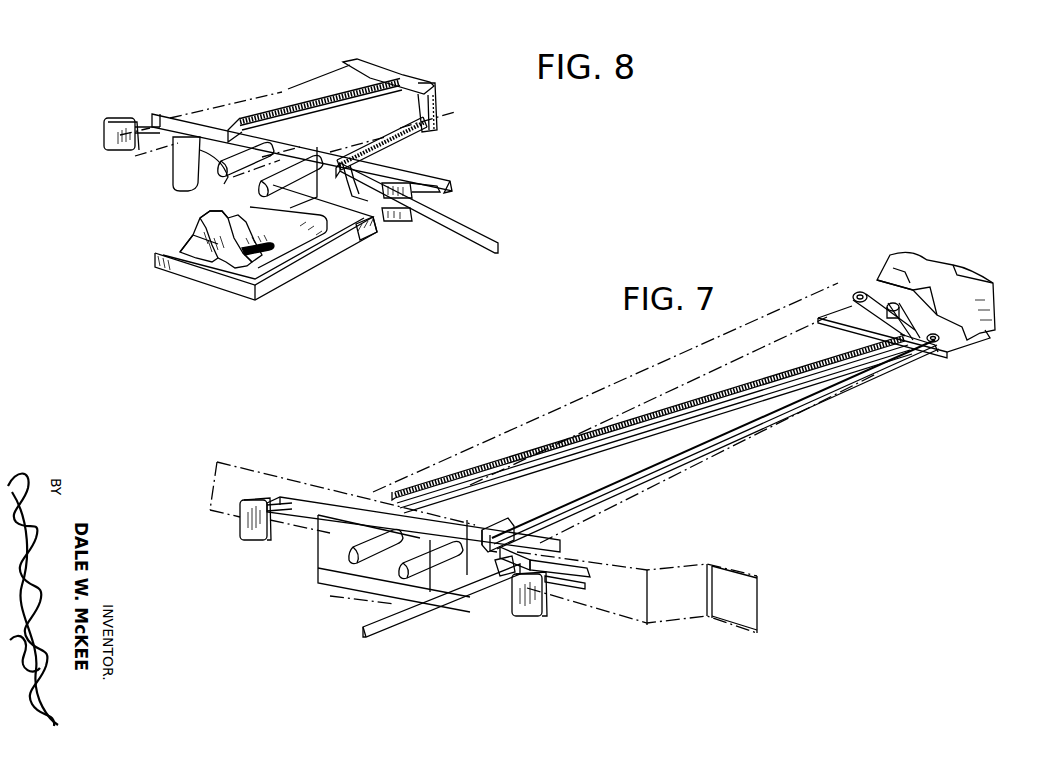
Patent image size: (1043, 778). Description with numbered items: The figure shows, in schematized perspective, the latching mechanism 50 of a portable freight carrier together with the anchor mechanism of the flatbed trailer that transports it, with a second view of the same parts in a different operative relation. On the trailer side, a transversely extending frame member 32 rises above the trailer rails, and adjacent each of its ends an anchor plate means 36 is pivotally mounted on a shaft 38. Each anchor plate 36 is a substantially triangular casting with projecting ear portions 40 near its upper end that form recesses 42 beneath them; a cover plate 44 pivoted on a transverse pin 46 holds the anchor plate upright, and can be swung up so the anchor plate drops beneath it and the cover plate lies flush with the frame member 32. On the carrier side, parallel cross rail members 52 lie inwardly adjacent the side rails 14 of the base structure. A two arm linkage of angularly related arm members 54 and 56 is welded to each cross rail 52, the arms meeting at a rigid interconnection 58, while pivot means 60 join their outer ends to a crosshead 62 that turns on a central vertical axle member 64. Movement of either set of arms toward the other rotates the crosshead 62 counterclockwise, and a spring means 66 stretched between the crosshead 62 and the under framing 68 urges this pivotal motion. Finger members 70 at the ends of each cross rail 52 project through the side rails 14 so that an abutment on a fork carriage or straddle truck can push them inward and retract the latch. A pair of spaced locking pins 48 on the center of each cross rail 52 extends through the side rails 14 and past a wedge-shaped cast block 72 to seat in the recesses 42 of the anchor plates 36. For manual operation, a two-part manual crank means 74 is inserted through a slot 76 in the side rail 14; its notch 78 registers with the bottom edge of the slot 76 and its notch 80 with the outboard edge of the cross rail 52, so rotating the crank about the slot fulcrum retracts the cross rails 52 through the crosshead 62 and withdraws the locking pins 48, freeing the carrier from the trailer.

In FIG. 7, the side rail 14 is at (595, 608).
In FIG. 8, the frame member 32 is at (372, 230).
In FIG. 8, the anchor plate means 36 is at (209, 250).
In FIG. 8, the shaft 38 is at (266, 287).
In FIG. 8, the ear portion 40 is at (198, 220).
In FIG. 8, the recess 42 is at (192, 240).
In FIG. 8, the cover plate 44 is at (283, 247).
In FIG. 8, the transverse pin 46 is at (334, 245).
In FIG. 8, the locking pin 48 is at (255, 165).
In FIG. 7, the locking pin 48 is at (405, 566).
In FIG. 7, the latching mechanism 50 is at (840, 413).
In FIG. 7, the cross rail member 52 is at (570, 565).
In FIG. 7, the arm member 54 is at (712, 447).
In FIG. 7, the arm member 56 is at (612, 436).
In FIG. 7, the rigid interconnection 58 is at (920, 350).
In FIG. 7, the pivot means 60 is at (962, 341).
In FIG. 7, the crosshead 62 is at (975, 314).
In FIG. 7, the central vertical axle member 64 is at (900, 305).
In FIG. 7, the spring means 66 is at (537, 445).
In FIG. 7, the under framing 68 is at (436, 462).
In FIG. 7, the finger member 70 is at (240, 527).
In FIG. 8, the wedge-shaped cast block 72 is at (170, 170).
In FIG. 7, the wedge-shaped cast block 72 is at (480, 530).
In FIG. 8, the manual crank means 74 is at (222, 188).
In FIG. 7, the manual crank means 74 is at (400, 628).
In FIG. 7, the slot 76 is at (540, 530).
In FIG. 8, the notch 78 is at (356, 196).
In FIG. 7, the notch 78 is at (503, 580).
In FIG. 7, the notch 80 is at (535, 565).